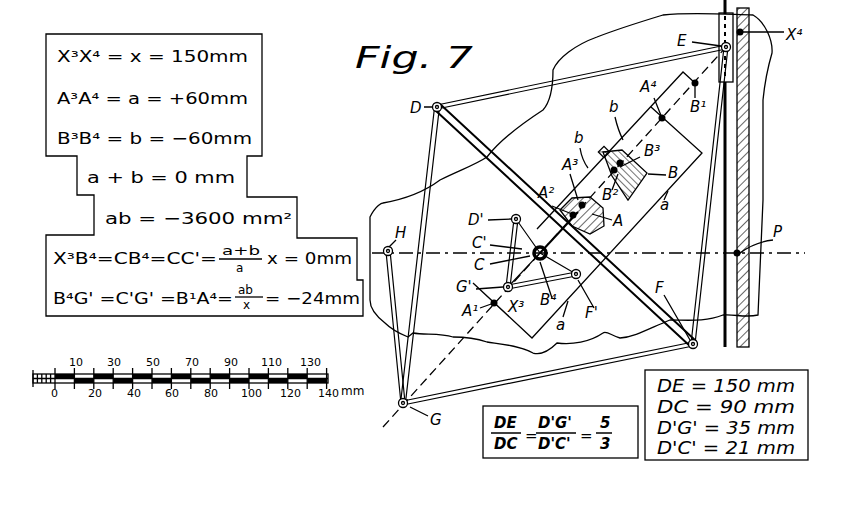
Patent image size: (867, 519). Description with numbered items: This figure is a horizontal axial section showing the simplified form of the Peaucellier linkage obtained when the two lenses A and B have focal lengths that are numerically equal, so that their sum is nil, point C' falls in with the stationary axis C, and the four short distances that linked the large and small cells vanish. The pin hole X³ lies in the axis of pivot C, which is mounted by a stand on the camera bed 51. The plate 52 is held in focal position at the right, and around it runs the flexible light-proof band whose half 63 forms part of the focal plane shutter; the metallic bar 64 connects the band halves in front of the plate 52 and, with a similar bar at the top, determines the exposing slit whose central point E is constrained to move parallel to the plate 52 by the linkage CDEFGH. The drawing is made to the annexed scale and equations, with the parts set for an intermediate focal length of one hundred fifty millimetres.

The camera bed 51 is at (506, 343).
The plate 52 is at (750, 343).
The flexible light-proof band half 63 is at (722, 230).
The metallic bar 64 is at (730, 62).